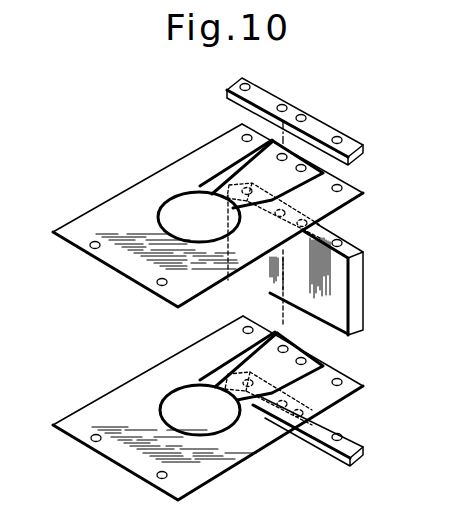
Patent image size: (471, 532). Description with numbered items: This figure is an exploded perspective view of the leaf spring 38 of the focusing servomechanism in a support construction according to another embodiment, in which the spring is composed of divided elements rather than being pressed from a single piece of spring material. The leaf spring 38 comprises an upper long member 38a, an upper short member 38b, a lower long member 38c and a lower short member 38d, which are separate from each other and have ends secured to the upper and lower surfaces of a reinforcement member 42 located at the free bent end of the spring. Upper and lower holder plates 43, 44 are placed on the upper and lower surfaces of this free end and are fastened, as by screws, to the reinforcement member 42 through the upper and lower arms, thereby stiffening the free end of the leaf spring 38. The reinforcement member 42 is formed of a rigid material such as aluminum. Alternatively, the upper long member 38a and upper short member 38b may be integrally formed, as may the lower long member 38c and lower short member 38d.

The leaf spring 38 is at (85, 207).
The upper long member 38a is at (162, 192).
The upper short member 38b is at (252, 175).
The lower long member 38c is at (235, 448).
The lower short member 38d is at (297, 348).
The reinforcement member 42 is at (357, 303).
The upper holder plate 43 is at (348, 443).
The lower holder plate 44 is at (325, 132).